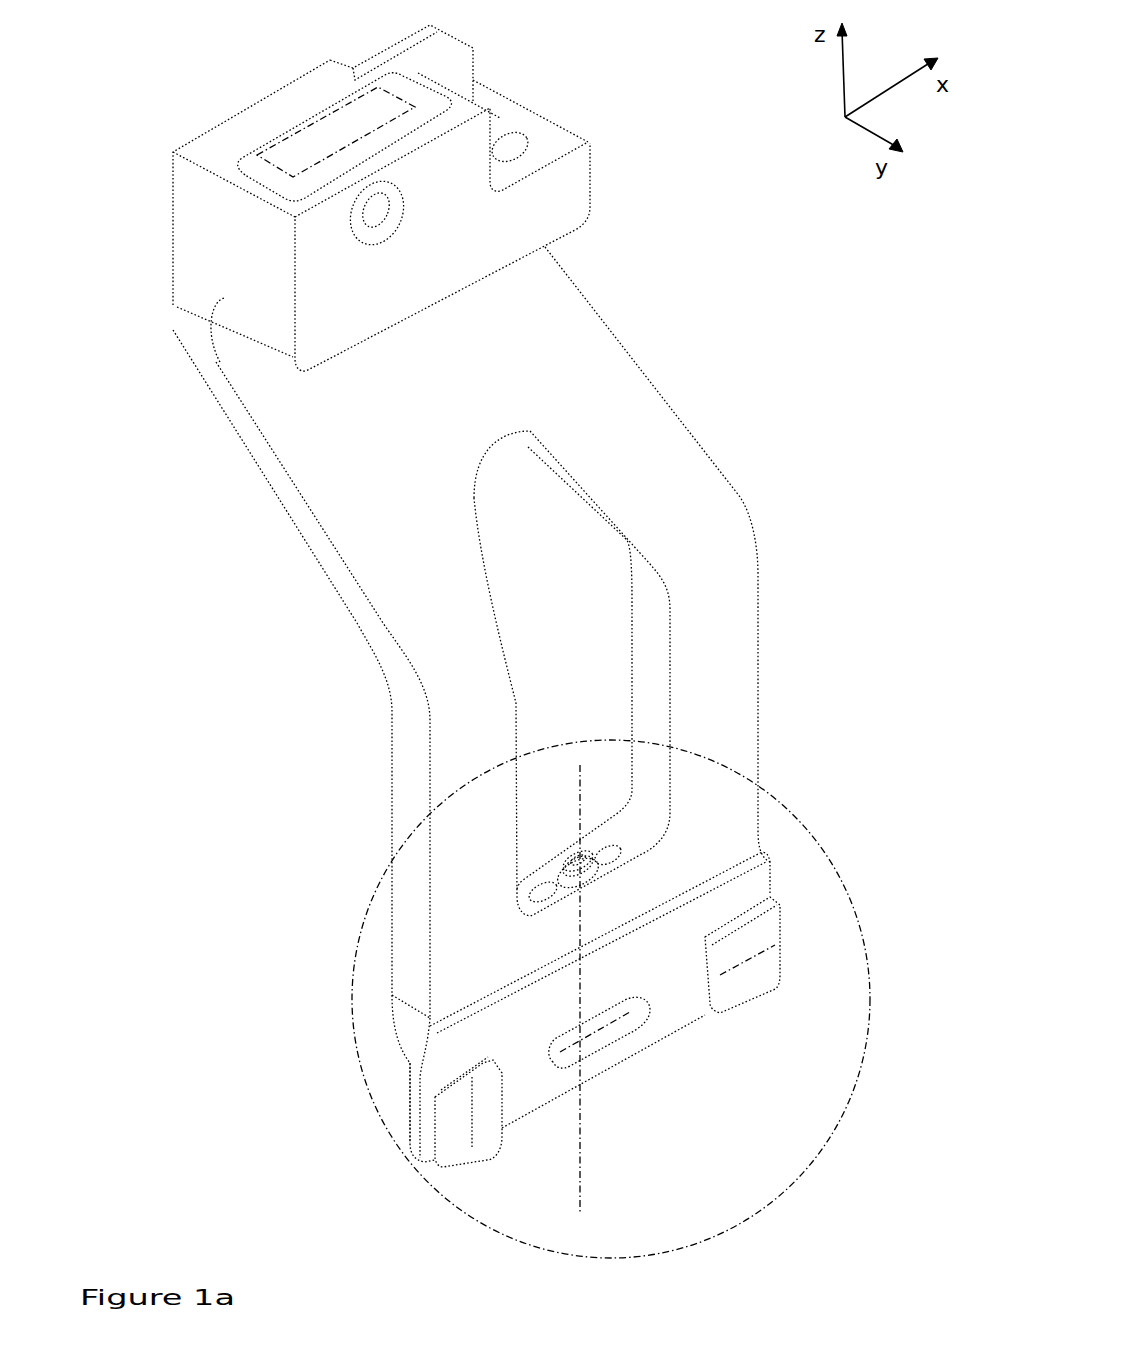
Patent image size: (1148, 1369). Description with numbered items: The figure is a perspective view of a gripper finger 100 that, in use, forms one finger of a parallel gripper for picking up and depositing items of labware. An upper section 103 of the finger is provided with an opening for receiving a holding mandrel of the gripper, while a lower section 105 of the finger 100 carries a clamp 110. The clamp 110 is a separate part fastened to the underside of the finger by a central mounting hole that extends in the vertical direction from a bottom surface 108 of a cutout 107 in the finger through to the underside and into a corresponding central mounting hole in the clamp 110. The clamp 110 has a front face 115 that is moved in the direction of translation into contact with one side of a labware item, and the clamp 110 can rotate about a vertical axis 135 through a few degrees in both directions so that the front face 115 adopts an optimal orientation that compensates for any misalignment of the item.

The gripper finger 100 is at (578, 348).
The upper section 103 is at (131, 197).
The lower section 105 is at (781, 765).
The cutout 107 is at (540, 600).
The bottom surface 108 is at (542, 868).
The clamp 110 is at (500, 1028).
The front face 115 is at (678, 990).
The vertical axis 135 is at (580, 820).